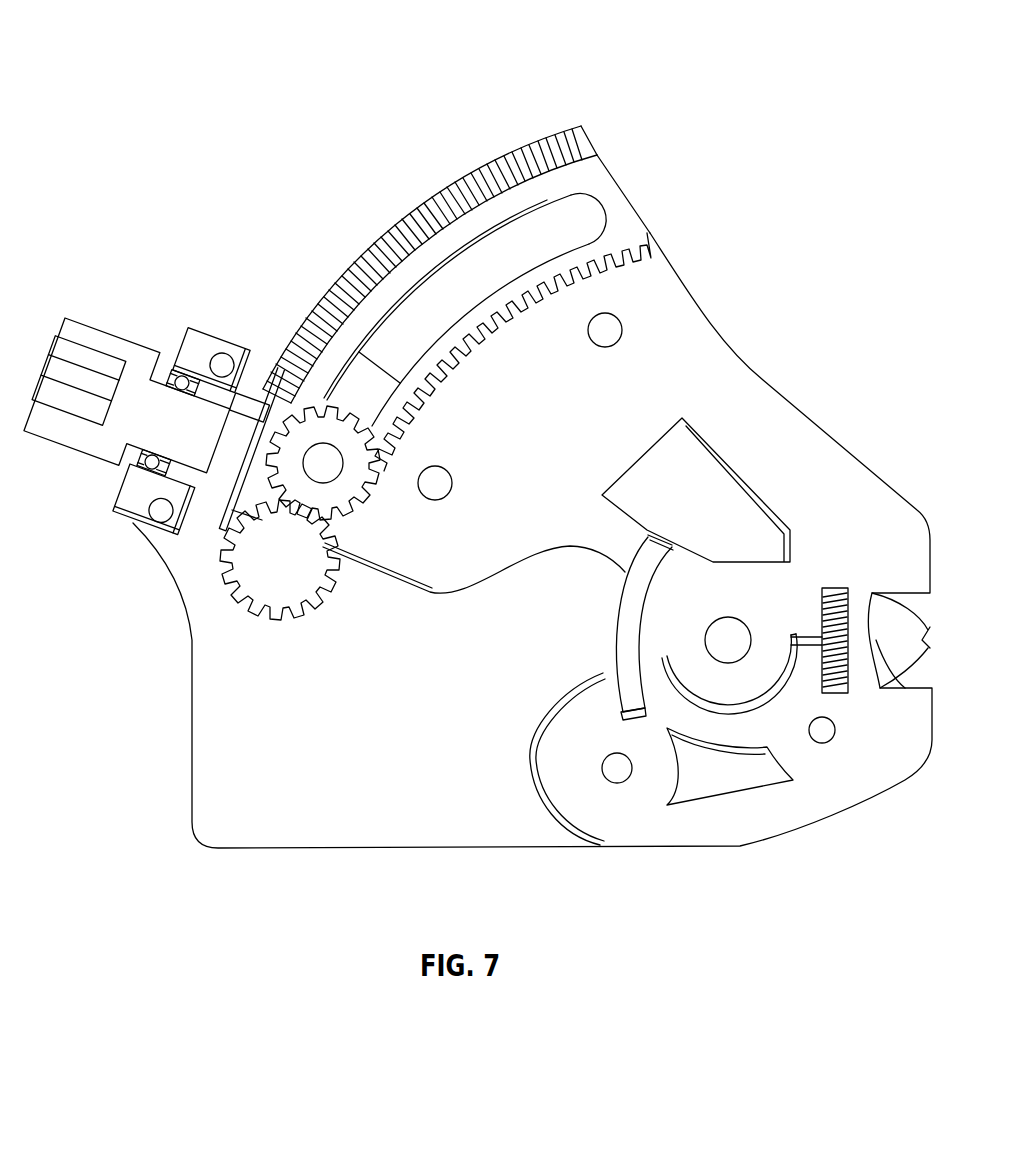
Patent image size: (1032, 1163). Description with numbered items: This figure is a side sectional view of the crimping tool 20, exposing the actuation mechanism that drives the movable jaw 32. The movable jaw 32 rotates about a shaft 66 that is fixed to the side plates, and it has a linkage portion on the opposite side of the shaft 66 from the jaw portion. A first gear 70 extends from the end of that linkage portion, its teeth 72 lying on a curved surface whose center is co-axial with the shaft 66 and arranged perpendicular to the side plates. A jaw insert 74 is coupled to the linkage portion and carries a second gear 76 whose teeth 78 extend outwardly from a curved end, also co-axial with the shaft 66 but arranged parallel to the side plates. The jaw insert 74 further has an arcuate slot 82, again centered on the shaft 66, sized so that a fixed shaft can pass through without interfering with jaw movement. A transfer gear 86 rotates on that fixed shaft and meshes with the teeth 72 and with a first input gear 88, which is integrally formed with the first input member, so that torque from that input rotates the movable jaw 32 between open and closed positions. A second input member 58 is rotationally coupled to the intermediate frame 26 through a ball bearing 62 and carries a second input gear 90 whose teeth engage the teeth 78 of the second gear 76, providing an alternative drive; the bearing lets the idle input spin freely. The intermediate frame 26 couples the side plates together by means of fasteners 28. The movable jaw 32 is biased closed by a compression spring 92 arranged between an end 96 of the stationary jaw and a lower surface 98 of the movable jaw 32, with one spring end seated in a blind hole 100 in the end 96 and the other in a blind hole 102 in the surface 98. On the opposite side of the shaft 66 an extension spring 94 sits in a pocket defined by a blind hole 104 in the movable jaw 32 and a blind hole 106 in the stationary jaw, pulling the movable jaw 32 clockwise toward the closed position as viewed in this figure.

The crimping tool 20 is at (172, 46).
The intermediate frame 26 is at (222, 332).
The fasteners 28 is at (152, 537).
The movable jaw 32 is at (815, 422).
The second input member 58 is at (80, 318).
The ball bearing 62 is at (178, 374).
The shaft 66 is at (735, 617).
The first gear 70 is at (503, 372).
The teeth 72 is at (642, 252).
The jaw insert 74 is at (610, 170).
The second gear 76 is at (500, 142).
The teeth 78 is at (570, 124).
The arcuate slot 82 is at (503, 262).
The transfer gear 86 is at (365, 500).
The first input gear 88 is at (305, 610).
The second input gear 90 is at (210, 502).
The compression spring 92 is at (625, 643).
The extension spring 94 is at (845, 592).
The end 96 is at (525, 752).
The lower surface 98 is at (570, 548).
The blind hole 100 is at (625, 716).
The blind hole 102 is at (645, 540).
The blind hole 104 is at (822, 625).
The blind hole 106 is at (835, 695).